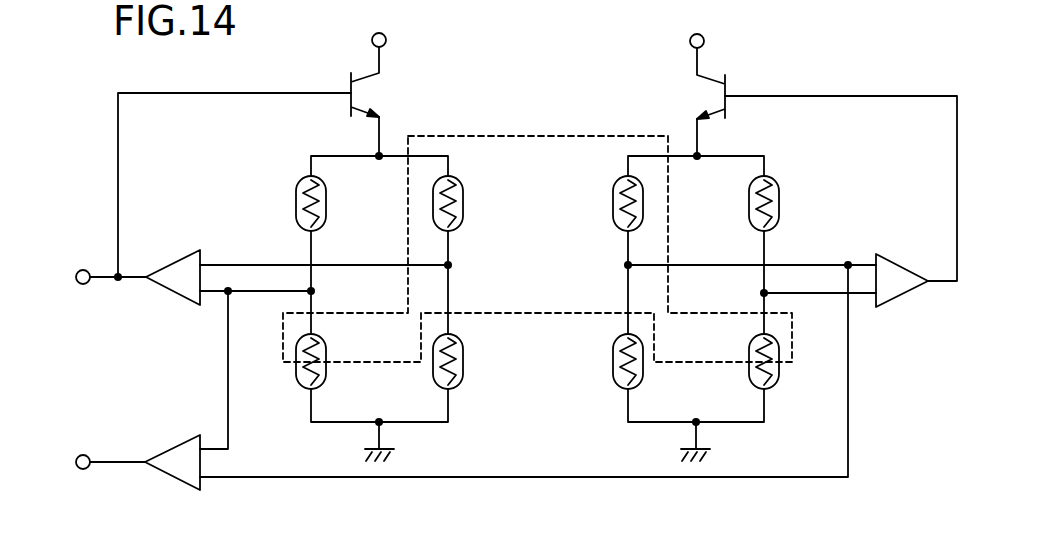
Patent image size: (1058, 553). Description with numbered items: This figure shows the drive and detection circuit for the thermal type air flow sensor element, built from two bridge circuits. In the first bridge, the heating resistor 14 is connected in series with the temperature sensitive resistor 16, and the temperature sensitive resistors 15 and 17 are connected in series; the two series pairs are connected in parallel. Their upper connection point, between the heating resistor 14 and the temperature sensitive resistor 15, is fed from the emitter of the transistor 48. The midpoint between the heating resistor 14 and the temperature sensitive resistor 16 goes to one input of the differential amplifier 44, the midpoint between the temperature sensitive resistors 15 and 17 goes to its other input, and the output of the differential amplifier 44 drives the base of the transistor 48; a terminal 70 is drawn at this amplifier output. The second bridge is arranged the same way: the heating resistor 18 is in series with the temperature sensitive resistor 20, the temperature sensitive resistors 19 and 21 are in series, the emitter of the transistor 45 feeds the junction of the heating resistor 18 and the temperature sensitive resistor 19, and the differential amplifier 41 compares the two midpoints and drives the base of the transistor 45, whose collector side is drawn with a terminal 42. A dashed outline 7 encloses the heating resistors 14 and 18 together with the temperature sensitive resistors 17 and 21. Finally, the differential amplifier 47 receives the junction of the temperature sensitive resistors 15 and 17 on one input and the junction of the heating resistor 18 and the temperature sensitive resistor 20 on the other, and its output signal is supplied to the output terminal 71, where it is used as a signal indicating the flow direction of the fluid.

The sensor element region 7 is at (538, 134).
The heating resistor 14 is at (464, 192).
The temperature sensitive resistor 15 is at (296, 200).
The temperature sensitive resistor 16 is at (464, 346).
The temperature sensitive resistor 17 is at (296, 373).
The heating resistor 18 is at (612, 212).
The temperature sensitive resistor 19 is at (780, 198).
The temperature sensitive resistor 20 is at (612, 378).
The temperature sensitive resistor 21 is at (780, 380).
The differential amplifier 41 is at (905, 293).
The power supply terminal 42 is at (705, 41).
The differential amplifier 44 is at (160, 287).
The transistor 45 is at (690, 93).
The differential amplifier 47 is at (160, 472).
The transistor 48 is at (382, 92).
The output terminal 70 is at (83, 269).
The output terminal 71 is at (83, 455).